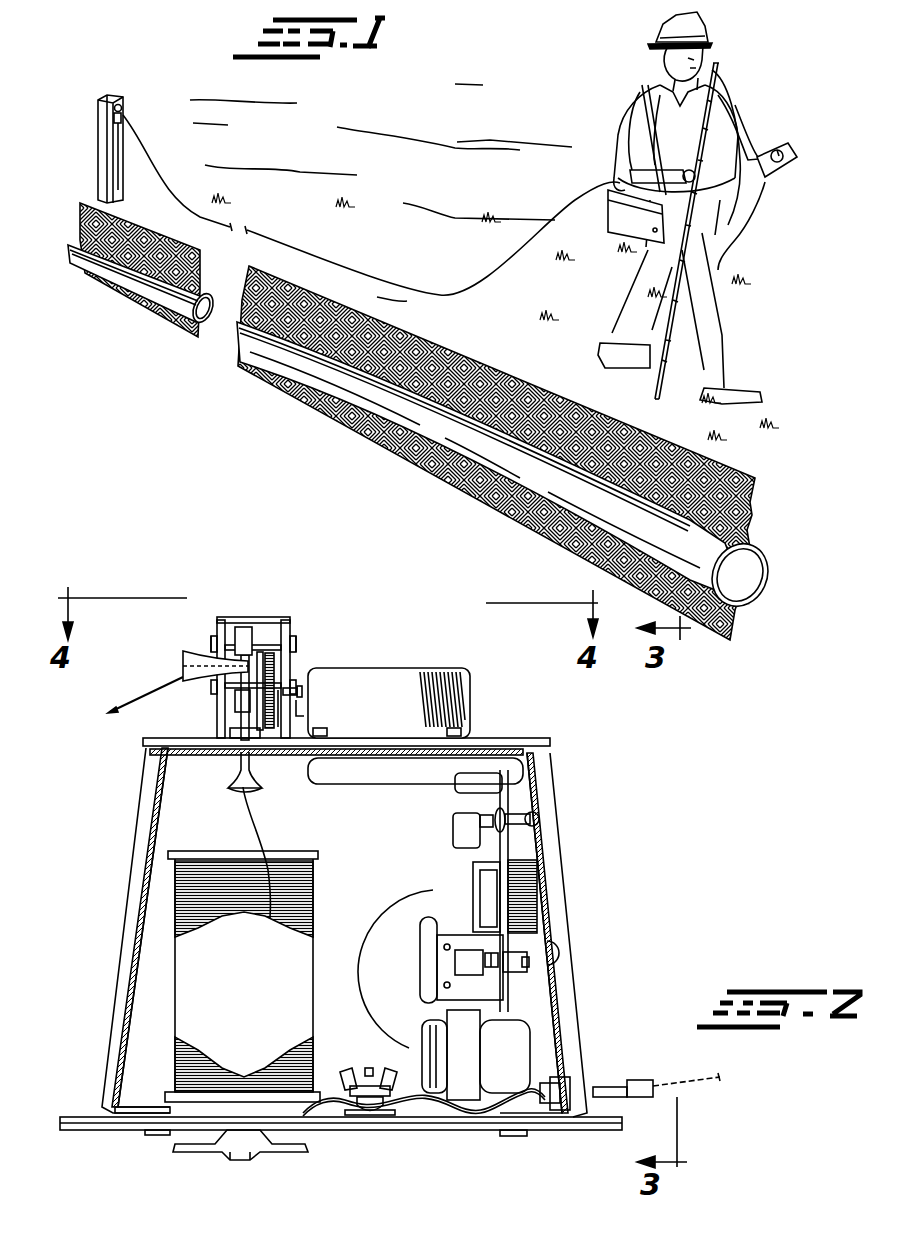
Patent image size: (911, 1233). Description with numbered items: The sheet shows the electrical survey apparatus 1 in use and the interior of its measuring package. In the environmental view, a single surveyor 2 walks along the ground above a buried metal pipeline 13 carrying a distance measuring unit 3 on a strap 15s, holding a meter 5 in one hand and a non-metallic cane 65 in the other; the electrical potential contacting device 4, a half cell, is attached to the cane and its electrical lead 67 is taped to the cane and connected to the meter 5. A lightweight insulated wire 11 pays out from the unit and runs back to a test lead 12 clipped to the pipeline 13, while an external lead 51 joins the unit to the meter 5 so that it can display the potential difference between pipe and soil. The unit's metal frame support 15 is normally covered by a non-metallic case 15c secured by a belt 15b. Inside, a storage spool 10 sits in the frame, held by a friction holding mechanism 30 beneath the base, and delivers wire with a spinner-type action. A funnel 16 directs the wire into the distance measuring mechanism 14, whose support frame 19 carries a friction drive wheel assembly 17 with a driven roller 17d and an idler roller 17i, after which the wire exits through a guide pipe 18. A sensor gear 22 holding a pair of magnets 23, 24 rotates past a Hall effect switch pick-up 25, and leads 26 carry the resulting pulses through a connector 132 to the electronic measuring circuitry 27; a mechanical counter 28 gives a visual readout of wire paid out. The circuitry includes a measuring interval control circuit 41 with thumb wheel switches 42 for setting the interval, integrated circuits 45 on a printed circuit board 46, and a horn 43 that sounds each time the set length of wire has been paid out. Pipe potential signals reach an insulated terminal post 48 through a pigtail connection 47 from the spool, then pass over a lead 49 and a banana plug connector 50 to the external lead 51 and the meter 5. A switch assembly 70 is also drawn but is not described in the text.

In FIG. 1, the electrical survey apparatus 1 is at (573, 140).
In FIG. 1, the surveyor 2 is at (627, 118).
In FIG. 1, the distance measuring unit 3 is at (610, 213).
In FIG. 1, the electrical potential contacting device 4 is at (656, 390).
In FIG. 1, the meter 5 is at (792, 143).
In FIG. 2, the storage spool 10 is at (322, 888).
In FIG. 1, the wire 11 is at (146, 149).
In FIG. 2, the wire 11 is at (148, 688).
In FIG. 1, the test lead 12 is at (122, 191).
In FIG. 1, the buried metal pipeline 13 is at (167, 292).
In FIG. 2, the distance measuring mechanism 14 is at (362, 656).
In FIG. 2, the metal frame support 15 is at (140, 927).
In FIG. 2, the belt 15b is at (80, 1113).
In FIG. 1, the non-metallic case 15c is at (633, 218).
In FIG. 1, the strap 15s is at (643, 83).
In FIG. 2, the funnel 16 is at (232, 783).
In FIG. 2, the friction drive wheel assembly 17 is at (252, 604).
In FIG. 2, the driven roller 17d is at (260, 660).
In FIG. 2, the idler roller 17i is at (243, 627).
In FIG. 2, the guide pipe 18 is at (197, 660).
In FIG. 2, the support frame 19 is at (222, 618).
In FIG. 2, the sensor gear 22 is at (280, 727).
In FIG. 2, the magnet 23 is at (273, 727).
In FIG. 2, the magnet 24 is at (276, 680).
In FIG. 2, the Hall effect switch pick-up 25 is at (296, 698).
In FIG. 2, the leads 26 is at (297, 724).
In FIG. 2, the electronic measuring circuitry 27 is at (440, 852).
In FIG. 2, the mechanical counter 28 is at (412, 668).
In FIG. 2, the friction holding mechanism 30 is at (165, 1160).
In FIG. 2, the measuring interval control circuit 41 is at (462, 878).
In FIG. 2, the thumb wheel switches 42 is at (522, 977).
In FIG. 2, the horn 43 is at (517, 1048).
In FIG. 2, the integrated circuits 45 is at (563, 873).
In FIG. 2, the printed circuit board 46 is at (507, 936).
In FIG. 2, the pigtail connection 47 is at (330, 1113).
In FIG. 2, the insulated terminal post 48 is at (371, 1072).
In FIG. 2, the lead 49 is at (417, 1108).
In FIG. 2, the banana plug connector 50 is at (593, 1077).
In FIG. 1, the external lead 51 is at (750, 218).
In FIG. 2, the external lead 51 is at (703, 1075).
In FIG. 1, the non-metallic cane 65 is at (715, 67).
In FIG. 1, the electrical lead 67 is at (668, 337).
In FIG. 2, the switch assembly 70 is at (456, 818).
In FIG. 2, the connector 132 is at (455, 779).